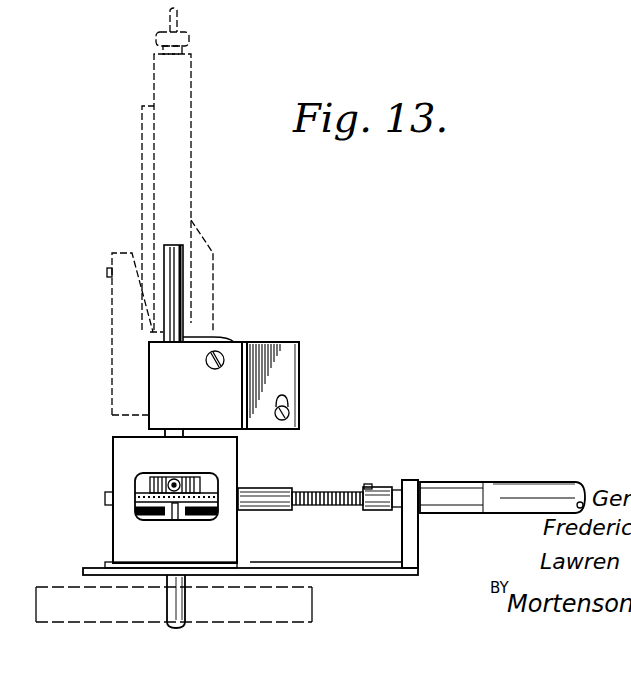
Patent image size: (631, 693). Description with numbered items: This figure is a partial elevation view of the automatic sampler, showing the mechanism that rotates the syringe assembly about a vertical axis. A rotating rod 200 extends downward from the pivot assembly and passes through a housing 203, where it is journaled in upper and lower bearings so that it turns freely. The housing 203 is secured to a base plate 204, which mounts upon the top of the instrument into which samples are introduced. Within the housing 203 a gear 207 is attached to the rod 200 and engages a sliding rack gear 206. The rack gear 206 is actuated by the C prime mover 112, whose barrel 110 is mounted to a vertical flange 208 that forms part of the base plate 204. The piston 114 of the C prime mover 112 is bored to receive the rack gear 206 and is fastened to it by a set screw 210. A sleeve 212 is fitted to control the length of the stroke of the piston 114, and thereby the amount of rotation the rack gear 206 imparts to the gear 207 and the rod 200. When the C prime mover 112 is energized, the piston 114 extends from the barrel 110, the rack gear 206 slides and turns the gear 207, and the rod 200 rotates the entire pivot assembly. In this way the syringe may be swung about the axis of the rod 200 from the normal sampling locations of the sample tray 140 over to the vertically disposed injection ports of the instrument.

The barrel 110 is at (477, 482).
The C prime mover 112 is at (513, 482).
The piston 114 is at (378, 492).
The sample tray 140 is at (53, 600).
The rotating rod 200 is at (172, 282).
The housing 203 is at (222, 452).
The base plate 204 is at (308, 567).
The sliding rack gear 206 is at (334, 506).
The gear 207 is at (152, 485).
The vertical flange 208 is at (414, 543).
The set screw 210 is at (368, 487).
The sleeve 212 is at (282, 492).